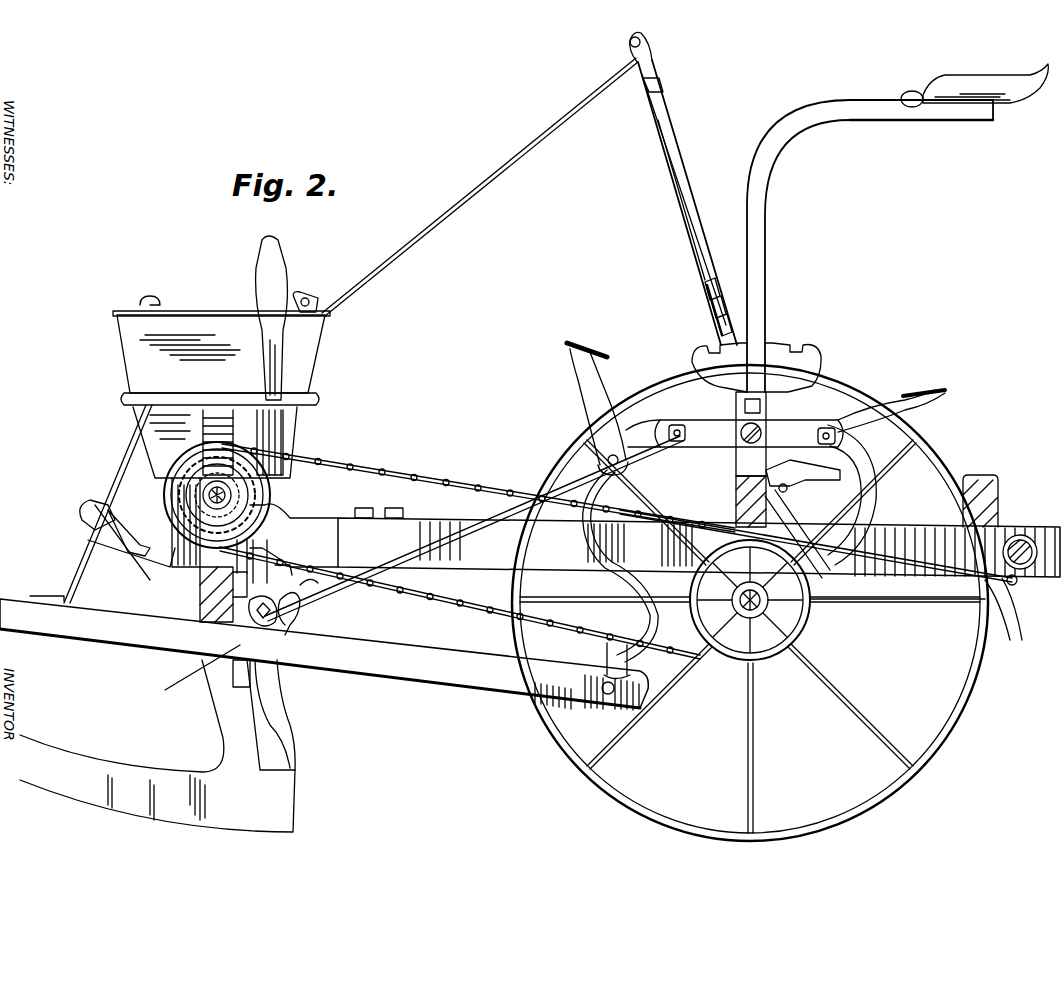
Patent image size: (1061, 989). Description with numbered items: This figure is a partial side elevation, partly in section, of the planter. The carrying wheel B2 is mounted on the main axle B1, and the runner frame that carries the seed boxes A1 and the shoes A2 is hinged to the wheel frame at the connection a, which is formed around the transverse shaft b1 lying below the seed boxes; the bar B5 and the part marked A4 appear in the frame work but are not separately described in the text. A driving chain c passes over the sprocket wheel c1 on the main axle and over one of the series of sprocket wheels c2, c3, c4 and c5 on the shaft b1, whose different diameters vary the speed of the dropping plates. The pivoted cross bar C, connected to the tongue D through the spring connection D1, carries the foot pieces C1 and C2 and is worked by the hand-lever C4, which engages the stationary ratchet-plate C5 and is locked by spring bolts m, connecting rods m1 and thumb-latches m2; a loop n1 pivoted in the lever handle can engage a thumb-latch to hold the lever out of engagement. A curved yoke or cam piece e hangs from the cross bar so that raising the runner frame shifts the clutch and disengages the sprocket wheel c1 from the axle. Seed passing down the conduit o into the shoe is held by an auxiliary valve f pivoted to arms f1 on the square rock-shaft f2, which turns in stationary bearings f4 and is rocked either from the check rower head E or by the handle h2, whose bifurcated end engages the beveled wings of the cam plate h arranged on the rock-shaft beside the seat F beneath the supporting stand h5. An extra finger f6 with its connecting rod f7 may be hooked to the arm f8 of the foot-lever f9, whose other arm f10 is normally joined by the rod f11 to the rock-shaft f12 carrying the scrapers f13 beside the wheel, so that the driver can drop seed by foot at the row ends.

The ground wheel B2 is at (750, 603).
The driving sprocket wheel c1 is at (792, 622).
The sprocket wheel c2 is at (812, 592).
The ratchet-plate C5 is at (795, 362).
The projecting arm f8 is at (775, 450).
The connecting rods m1 is at (675, 150).
The thumb-latches m2 is at (650, 62).
The loop n1 is at (630, 52).
The hand-lever C4 is at (703, 200).
The spring bolts m is at (704, 282).
The pivoted cross bar C is at (705, 428).
The foot piece C1 is at (585, 345).
The foot piece C2 is at (925, 396).
The curved yoke or cam piece e is at (866, 495).
The foot-lever f9 is at (808, 470).
The projecting arm f10 is at (800, 503).
The rod f11 is at (885, 555).
The rock-shaft f12 is at (1014, 584).
The scrapers f13 is at (1010, 595).
The frame beam B5 is at (699, 526).
The spring connection D1 is at (585, 550).
The hinged connection a is at (315, 515).
The driving chain c is at (477, 551).
The seed boxes A1 is at (221, 344).
The seat F is at (125, 399).
The handle h2 is at (283, 358).
The sprocket wheel c3 is at (240, 460).
The sprocket wheel c4 is at (260, 465).
The sprocket wheel c5 is at (280, 470).
The supporting stand h5 is at (265, 480).
The transverse shaft b1 is at (165, 480).
The check rower heads E is at (102, 504).
The hopper support A4 is at (200, 585).
The transverse rock-shaft f2 is at (200, 603).
The extra projecting finger f6 is at (243, 620).
The projecting arms f1 is at (290, 618).
The auxiliary valves f is at (310, 590).
The vibrating cam plates h is at (285, 578).
The stationary bearings f4 is at (185, 669).
The connecting rod f7 is at (385, 570).
The tongue D is at (324, 654).
The main axle B1 is at (700, 672).
The shoes A2 is at (157, 746).
The tube or conduit o is at (264, 715).